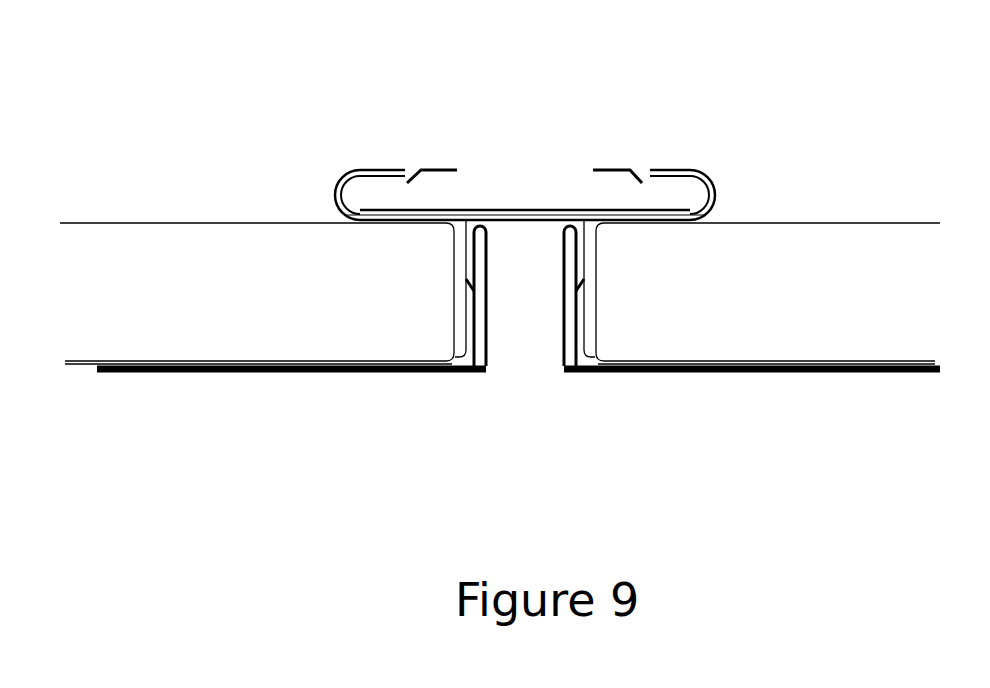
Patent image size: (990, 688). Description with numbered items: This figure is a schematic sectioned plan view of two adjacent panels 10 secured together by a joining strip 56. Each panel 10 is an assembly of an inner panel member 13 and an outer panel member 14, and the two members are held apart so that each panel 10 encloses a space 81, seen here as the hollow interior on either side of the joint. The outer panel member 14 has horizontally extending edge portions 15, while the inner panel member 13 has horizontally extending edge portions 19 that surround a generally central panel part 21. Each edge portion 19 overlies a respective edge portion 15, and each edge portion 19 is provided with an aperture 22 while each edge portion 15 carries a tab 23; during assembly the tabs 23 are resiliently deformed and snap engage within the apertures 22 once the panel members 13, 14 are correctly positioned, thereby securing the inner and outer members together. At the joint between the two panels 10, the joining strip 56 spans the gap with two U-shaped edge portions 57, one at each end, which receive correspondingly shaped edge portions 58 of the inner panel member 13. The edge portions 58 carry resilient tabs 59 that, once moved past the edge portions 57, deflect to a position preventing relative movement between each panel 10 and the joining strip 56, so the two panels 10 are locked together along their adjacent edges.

The panel 10 is at (180, 375).
The inner panel member 13 is at (452, 229).
The outer panel member 14 is at (240, 393).
The horizontally extending edge portion 15 is at (436, 375).
The horizontally extending edge portion 19 is at (452, 331).
The central panel part 21 is at (276, 363).
The aperture 22 is at (574, 286).
The tab 23 is at (465, 283).
The joining strip 56 is at (522, 207).
The U-shaped edge portion 57 is at (357, 170).
The edge portion 58 is at (340, 176).
The resilient tab 59 is at (420, 170).
The space 81 is at (500, 292).